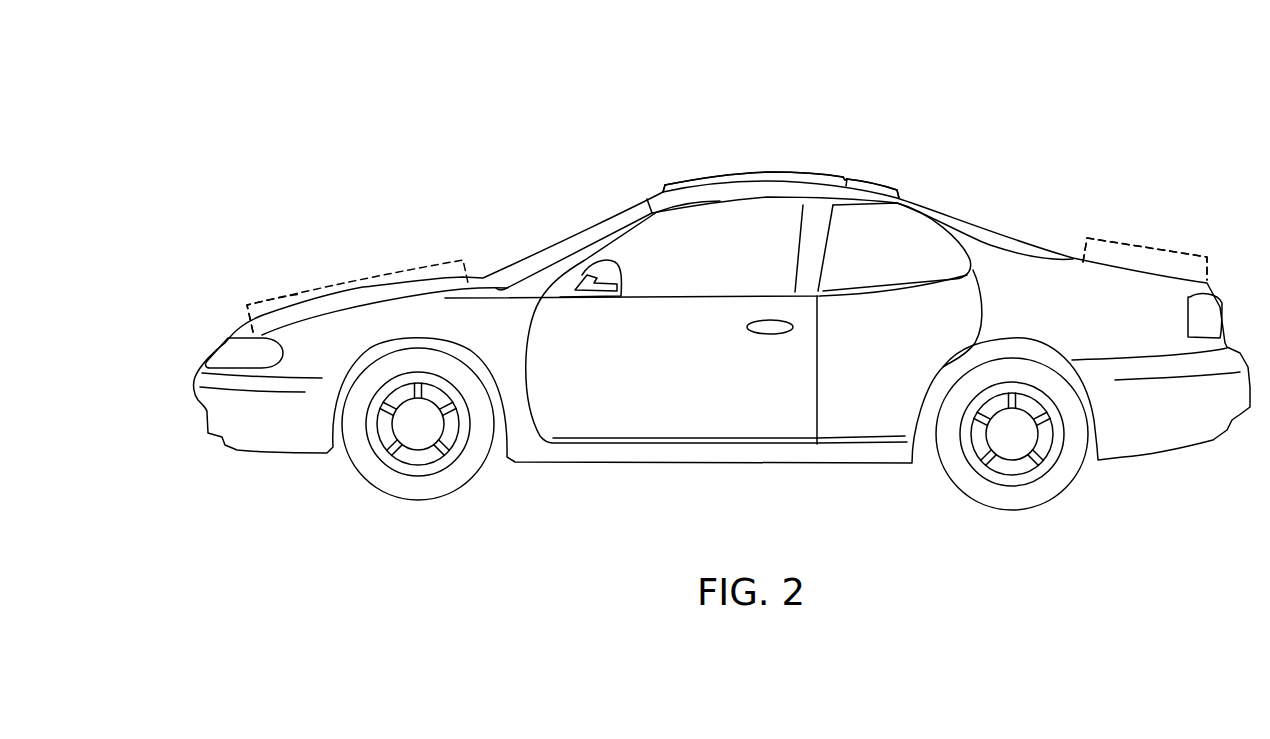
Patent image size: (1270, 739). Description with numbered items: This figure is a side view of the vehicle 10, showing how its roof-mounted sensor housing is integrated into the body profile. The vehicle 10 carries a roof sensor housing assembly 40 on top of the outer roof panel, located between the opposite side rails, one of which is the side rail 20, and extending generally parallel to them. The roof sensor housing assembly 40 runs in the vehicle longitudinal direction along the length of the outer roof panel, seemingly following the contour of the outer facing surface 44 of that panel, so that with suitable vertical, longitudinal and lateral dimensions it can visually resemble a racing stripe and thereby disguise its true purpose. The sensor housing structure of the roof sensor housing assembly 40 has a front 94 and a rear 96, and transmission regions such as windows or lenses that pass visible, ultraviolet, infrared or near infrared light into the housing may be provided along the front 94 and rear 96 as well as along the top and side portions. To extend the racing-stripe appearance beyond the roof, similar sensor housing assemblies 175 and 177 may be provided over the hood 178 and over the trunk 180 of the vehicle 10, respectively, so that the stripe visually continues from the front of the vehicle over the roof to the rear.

The vehicle 10 is at (942, 135).
The side rail 20 is at (737, 199).
The roof sensor housing assembly 40 is at (768, 143).
The outer facing surface 44 is at (846, 180).
The front 94 is at (660, 188).
The rear 96 is at (903, 193).
The sensor housing assembly 175 is at (362, 275).
The hood 178 is at (280, 318).
The sensor housing assembly 177 is at (1132, 212).
The trunk 180 is at (1170, 288).